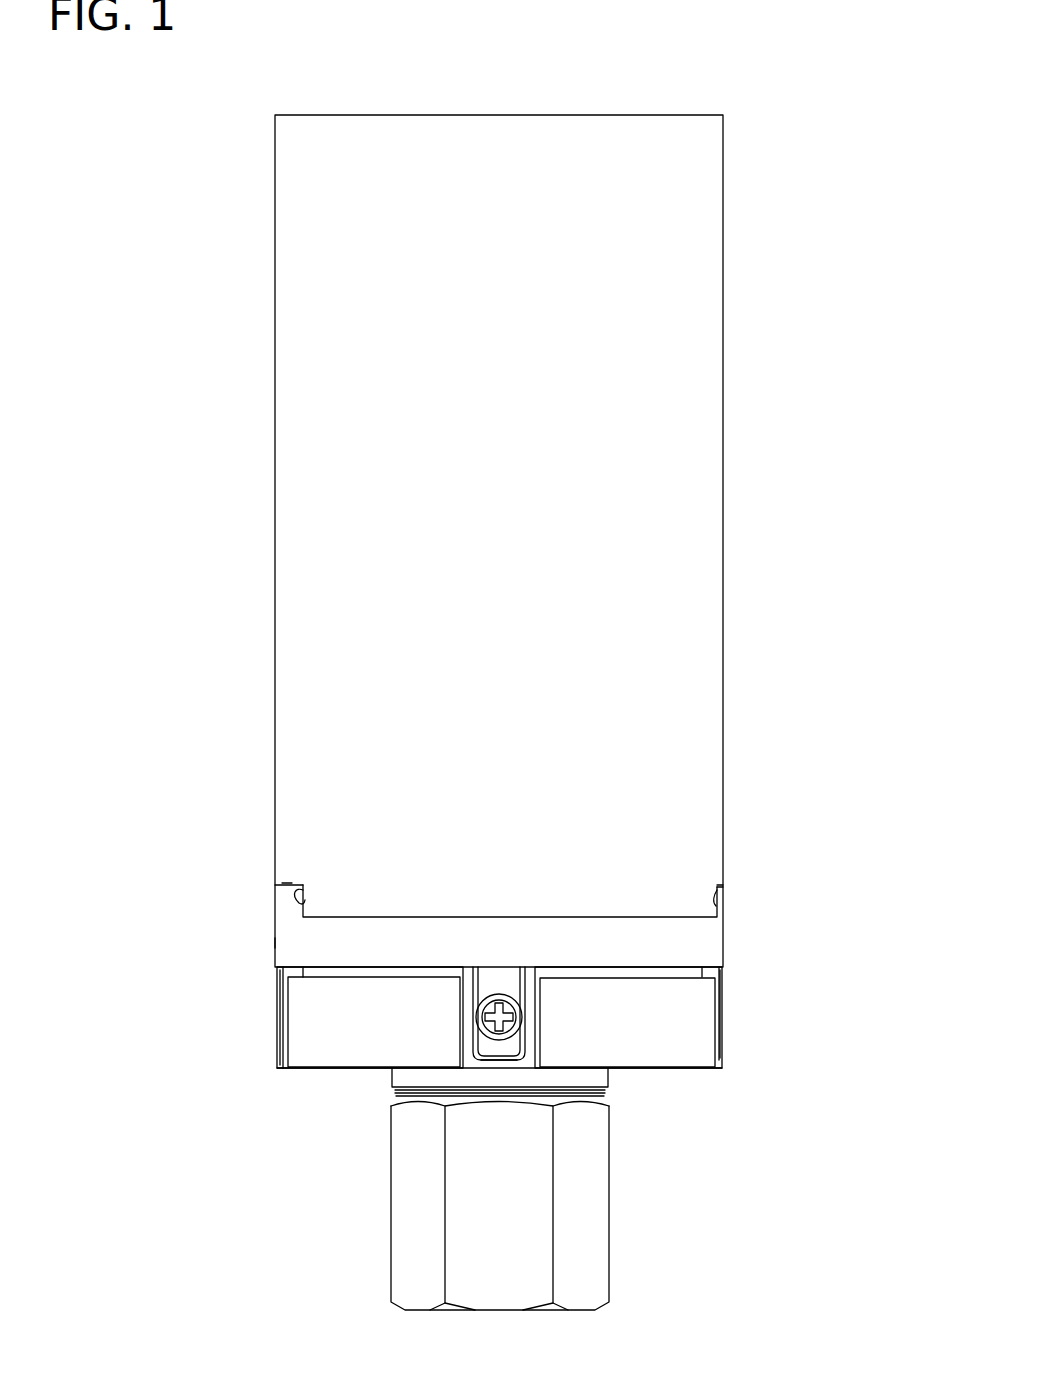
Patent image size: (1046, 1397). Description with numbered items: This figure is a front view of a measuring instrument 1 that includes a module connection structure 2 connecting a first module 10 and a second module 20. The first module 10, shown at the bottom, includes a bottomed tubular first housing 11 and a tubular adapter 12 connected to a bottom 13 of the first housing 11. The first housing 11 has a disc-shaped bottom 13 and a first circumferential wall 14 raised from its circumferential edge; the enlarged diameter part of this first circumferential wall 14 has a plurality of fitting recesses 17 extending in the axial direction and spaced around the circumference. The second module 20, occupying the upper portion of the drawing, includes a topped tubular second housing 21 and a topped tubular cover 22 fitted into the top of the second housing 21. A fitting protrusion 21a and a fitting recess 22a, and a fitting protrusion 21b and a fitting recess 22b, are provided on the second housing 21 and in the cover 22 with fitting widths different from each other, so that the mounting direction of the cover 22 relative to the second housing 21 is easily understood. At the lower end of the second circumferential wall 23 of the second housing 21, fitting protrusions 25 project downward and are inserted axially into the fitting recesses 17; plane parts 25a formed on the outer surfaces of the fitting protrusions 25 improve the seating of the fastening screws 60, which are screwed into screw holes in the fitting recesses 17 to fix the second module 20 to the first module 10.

The measuring instrument 1 is at (254, 136).
The module connection structure 2 is at (246, 962).
The first module 10 is at (165, 1095).
The first housing 11 is at (320, 1070).
The adapter 12 is at (389, 1212).
The bottom 13 is at (650, 1070).
The first circumferential wall 14 is at (695, 1000).
The fitting recesses 17 is at (288, 1000).
The second module 20 is at (165, 700).
The second housing 21 is at (276, 923).
The fitting protrusion 21a is at (285, 882).
The fitting protrusion 21b is at (721, 884).
The cover 22 is at (276, 693).
The fitting recess 22a is at (304, 900).
The fitting recess 22b is at (716, 905).
The second circumferential wall 23 is at (275, 943).
The fitting protrusions 25 is at (288, 1030).
The plane parts 25a is at (486, 1052).
The fastening screws 60 is at (499, 994).